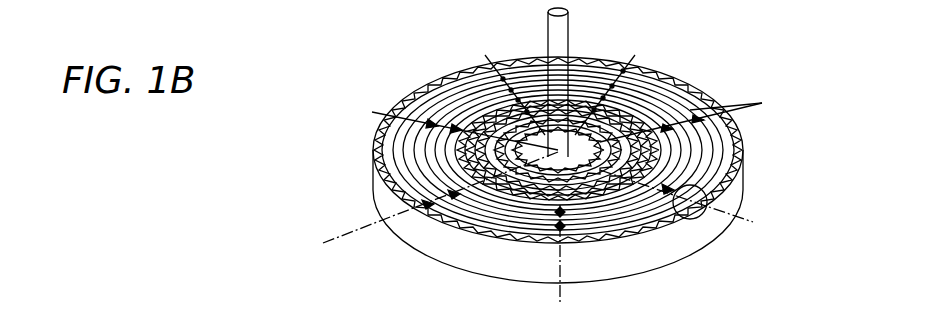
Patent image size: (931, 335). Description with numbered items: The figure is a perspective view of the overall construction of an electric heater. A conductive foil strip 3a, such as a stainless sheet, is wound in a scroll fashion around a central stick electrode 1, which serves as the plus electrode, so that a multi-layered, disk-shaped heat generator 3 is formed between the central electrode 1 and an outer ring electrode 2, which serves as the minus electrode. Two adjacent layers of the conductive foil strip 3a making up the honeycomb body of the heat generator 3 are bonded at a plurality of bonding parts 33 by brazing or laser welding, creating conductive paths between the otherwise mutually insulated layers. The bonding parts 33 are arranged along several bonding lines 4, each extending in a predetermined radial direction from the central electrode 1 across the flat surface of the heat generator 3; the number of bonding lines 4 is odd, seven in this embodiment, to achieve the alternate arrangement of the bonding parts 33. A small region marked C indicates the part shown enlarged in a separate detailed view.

The central stick electrode 1 is at (547, 31).
The ring electrode 2 is at (452, 243).
The multi-layered heat generator 3 is at (440, 96).
The bonding parts 33 is at (640, 72).
The conductive foil strip 3a is at (705, 102).
The bonding lines 4 is at (333, 232).
The part C is at (699, 214).